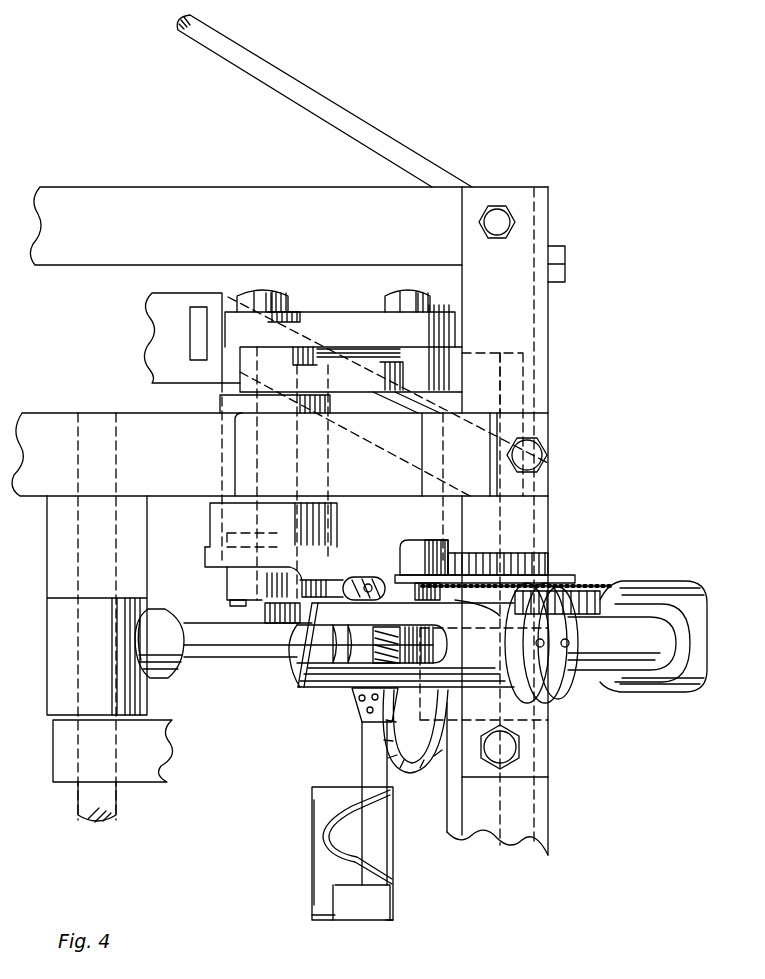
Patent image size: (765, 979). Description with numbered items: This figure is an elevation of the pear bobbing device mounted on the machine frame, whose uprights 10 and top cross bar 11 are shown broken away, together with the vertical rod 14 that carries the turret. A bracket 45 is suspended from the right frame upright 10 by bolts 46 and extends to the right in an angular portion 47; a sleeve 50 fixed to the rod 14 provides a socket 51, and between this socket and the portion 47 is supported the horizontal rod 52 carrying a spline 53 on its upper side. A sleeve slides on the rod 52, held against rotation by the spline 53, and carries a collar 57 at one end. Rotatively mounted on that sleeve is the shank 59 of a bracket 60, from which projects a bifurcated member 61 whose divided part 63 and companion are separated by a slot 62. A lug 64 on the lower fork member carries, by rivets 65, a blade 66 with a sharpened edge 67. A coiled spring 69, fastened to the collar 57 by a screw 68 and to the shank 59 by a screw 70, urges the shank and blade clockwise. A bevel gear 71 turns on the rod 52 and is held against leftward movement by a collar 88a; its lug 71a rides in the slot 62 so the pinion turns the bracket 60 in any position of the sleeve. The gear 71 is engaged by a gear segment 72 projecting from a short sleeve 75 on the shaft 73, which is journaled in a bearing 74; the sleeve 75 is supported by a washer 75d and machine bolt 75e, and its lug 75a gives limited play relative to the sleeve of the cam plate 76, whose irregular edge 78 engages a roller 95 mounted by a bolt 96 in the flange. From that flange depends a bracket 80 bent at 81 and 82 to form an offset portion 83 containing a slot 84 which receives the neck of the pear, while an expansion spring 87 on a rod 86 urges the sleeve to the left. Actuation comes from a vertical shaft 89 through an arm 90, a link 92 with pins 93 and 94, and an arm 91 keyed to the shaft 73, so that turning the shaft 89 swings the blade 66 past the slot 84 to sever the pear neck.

The uprights 10 is at (545, 842).
The cross bar 11 is at (376, 254).
The rod 14 is at (111, 806).
The bracket 45 is at (549, 757).
The bolts 46 is at (506, 752).
The angular portion 47 is at (656, 612).
The sleeve 50 is at (150, 706).
The socket 51 is at (183, 670).
The rod 52 is at (231, 662).
The spline 53 is at (632, 598).
The collar 57 is at (568, 636).
The shank 59 is at (556, 708).
The bracket 60 is at (455, 716).
The bifurcated member 61 is at (322, 682).
The slot 62 is at (291, 666).
The divided part 63 is at (300, 684).
The lug 64 is at (352, 705).
The rivets 65 is at (366, 712).
The blade 66 is at (380, 736).
The sharpened edge 67 is at (420, 770).
The screw 68 is at (545, 668).
The coiled spring 69 is at (541, 700).
The screw 70 is at (500, 690).
The bevel gear 71 is at (390, 625).
The lug 71a is at (418, 624).
The gear segment 72 is at (372, 598).
The shaft 73 is at (250, 396).
The bearing 74 is at (222, 480).
The short sleeve 75 is at (226, 581).
The lug 75a is at (207, 553).
The washer 75d is at (231, 603).
The machine bolt 75e is at (268, 612).
The cam plate 76 is at (372, 582).
The irregular edge 78 is at (540, 562).
The bracket 80 is at (393, 905).
The bend 81 is at (390, 922).
The bend 82 is at (334, 922).
The offset portion 83 is at (316, 858).
The slot 84 is at (322, 840).
The rod 86 is at (588, 600).
The expansion spring 87 is at (602, 588).
The collar 88a is at (332, 665).
The vertical shaft 89 is at (505, 377).
The arm 90 is at (255, 303).
The arm 91 is at (258, 360).
The link 92 is at (345, 325).
The pin 93 is at (282, 313).
The pin 94 is at (412, 300).
The roller 95 is at (452, 566).
The bolt 96 is at (436, 543).